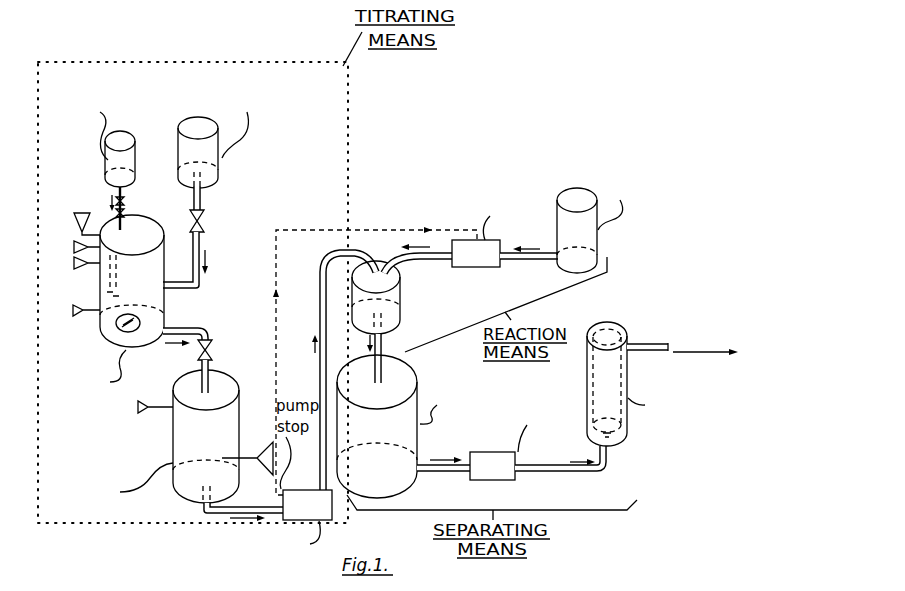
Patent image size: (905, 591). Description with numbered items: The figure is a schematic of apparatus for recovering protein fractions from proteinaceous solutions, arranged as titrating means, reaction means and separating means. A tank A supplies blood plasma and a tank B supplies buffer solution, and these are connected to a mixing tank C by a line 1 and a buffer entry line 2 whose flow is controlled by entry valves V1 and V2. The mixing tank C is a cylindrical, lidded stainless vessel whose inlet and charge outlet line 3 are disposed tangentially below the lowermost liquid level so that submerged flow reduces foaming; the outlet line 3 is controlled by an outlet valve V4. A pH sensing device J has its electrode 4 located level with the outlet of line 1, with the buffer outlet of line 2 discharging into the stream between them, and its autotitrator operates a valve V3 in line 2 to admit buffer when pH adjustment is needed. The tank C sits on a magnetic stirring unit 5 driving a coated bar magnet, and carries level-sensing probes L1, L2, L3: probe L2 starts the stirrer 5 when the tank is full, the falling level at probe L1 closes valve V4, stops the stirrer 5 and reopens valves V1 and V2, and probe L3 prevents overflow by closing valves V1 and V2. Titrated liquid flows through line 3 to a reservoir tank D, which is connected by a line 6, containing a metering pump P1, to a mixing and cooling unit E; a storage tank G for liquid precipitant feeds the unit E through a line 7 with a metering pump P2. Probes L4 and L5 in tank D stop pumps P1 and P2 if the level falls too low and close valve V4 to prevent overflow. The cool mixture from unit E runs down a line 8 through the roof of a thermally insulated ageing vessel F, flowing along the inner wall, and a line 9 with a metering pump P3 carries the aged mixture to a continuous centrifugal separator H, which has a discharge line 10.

The line 1 is at (192, 259).
The buffer entry line 2 is at (121, 231).
The charge outlet line 3 is at (189, 331).
The electrode 4 is at (114, 286).
The magnetic stirring unit 5 is at (118, 331).
The line 6 is at (244, 508).
The line 7 is at (531, 262).
The line 8 is at (385, 348).
The line 9 is at (553, 466).
The discharge line 10 is at (645, 347).
The tank A is at (218, 130).
The tank B is at (130, 142).
The mixing tank C is at (157, 253).
The reservoir tank D is at (239, 429).
The mixing and cooling unit E is at (400, 290).
The aggregating (ageing) vessel F is at (417, 388).
The storage tank G is at (557, 202).
The continuous centrifugal separator H is at (587, 389).
The pH sensing device J is at (87, 213).
The level-sensing probe L1 is at (75, 315).
The level-sensing probe L2 is at (83, 268).
The level-sensing probe L3 is at (74, 251).
The liquid-level probe L4 is at (247, 457).
The liquid-level probe L5 is at (143, 413).
The metering pump P1 is at (297, 521).
The metering pump P2 is at (476, 259).
The metering pump P3 is at (499, 452).
The entry valve V1 is at (204, 222).
The entry valve V2 is at (124, 200).
The valve V3 is at (124, 212).
The outlet valve V4 is at (212, 351).